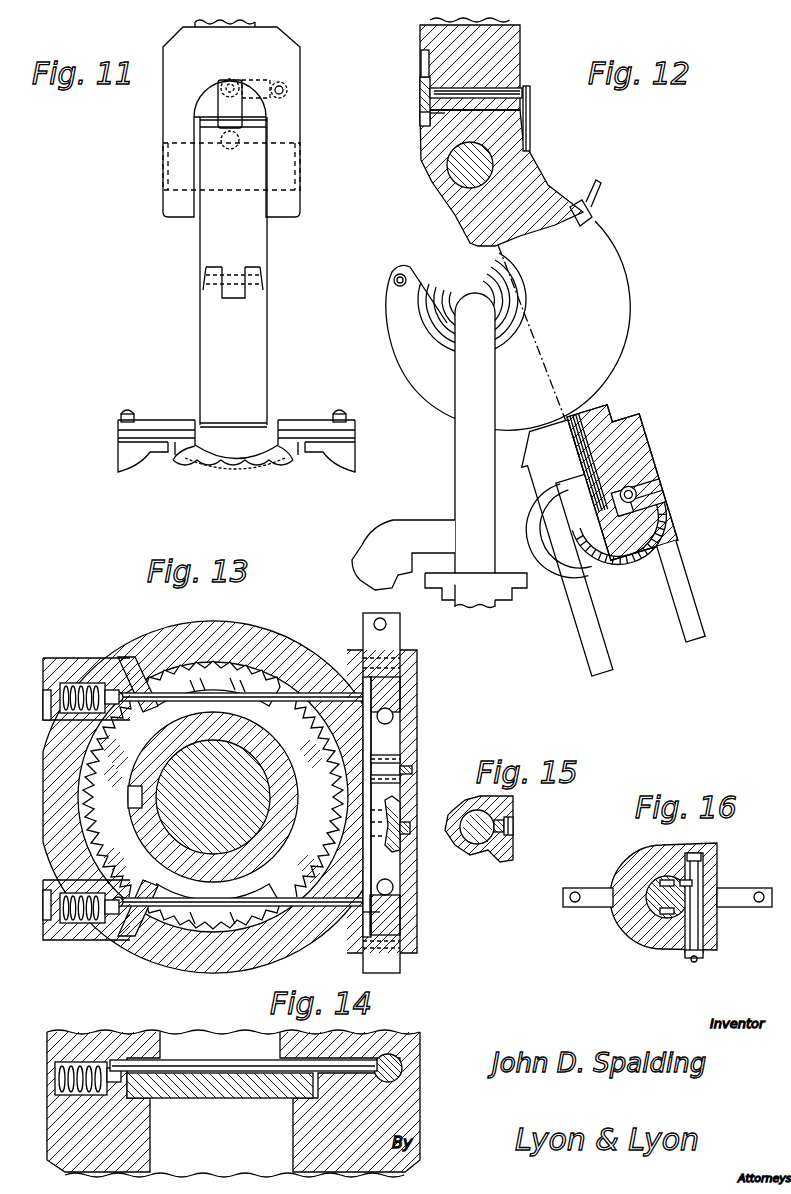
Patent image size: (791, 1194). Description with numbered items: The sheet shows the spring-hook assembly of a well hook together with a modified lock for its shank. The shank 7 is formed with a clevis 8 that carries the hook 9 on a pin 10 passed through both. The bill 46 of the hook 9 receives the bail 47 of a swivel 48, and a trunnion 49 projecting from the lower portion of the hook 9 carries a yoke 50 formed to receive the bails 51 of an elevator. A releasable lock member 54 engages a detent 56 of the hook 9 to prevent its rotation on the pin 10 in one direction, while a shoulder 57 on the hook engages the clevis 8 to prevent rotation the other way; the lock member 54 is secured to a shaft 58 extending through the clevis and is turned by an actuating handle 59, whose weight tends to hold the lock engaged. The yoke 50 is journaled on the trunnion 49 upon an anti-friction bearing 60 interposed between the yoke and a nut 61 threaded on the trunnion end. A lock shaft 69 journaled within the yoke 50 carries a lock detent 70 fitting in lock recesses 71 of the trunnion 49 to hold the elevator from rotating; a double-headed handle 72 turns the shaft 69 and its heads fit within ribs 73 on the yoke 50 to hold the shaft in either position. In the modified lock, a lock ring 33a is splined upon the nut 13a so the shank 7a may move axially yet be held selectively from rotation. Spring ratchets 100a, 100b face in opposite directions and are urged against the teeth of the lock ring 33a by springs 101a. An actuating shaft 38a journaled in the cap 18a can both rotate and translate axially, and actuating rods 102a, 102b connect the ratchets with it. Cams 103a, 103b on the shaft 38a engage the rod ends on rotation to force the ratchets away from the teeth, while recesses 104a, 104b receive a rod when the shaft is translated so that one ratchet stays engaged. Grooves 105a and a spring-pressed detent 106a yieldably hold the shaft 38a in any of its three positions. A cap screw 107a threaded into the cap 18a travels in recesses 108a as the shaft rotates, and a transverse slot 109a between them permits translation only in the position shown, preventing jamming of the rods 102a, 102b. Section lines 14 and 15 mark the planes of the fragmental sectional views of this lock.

In FIG. 11, the shank 7 is at (255, 24).
In FIG. 11, the clevis 8 is at (296, 67).
In FIG. 12, the clevis 8 is at (512, 46).
In FIG. 11, the hook 9 is at (268, 243).
In FIG. 12, the hook 9 is at (617, 298).
In FIG. 11, the pin 10 is at (287, 170).
In FIG. 12, the pin 10 is at (482, 170).
In FIG. 11, the bill 46 is at (256, 282).
In FIG. 12, the bill 46 is at (398, 288).
In FIG. 12, the bail 47 is at (455, 449).
In FIG. 12, the swivel 48 is at (424, 512).
In FIG. 12, the trunnion 49 is at (583, 410).
In FIG. 11, the yoke 50 is at (283, 473).
In FIG. 12, the yoke 50 is at (652, 451).
In FIG. 16, the yoke 50 is at (637, 844).
In FIG. 12, the bails 51 is at (683, 603).
In FIG. 11, the releasable lock member 54 is at (219, 106).
In FIG. 12, the releasable lock member 54 is at (420, 90).
In FIG. 11, the detent 56 is at (250, 128).
In FIG. 12, the detent 56 is at (420, 123).
In FIG. 12, the shoulder 57 is at (530, 104).
In FIG. 12, the shaft 58 is at (500, 83).
In FIG. 12, the actuating handle 59 is at (522, 88).
In FIG. 12, the anti-friction bearing 60 is at (638, 494).
In FIG. 12, the nut 61 is at (660, 522).
In FIG. 16, the lock shaft 69 is at (700, 882).
In FIG. 16, the lock detent 70 is at (696, 906).
In FIG. 16, the lock recesses 71 is at (668, 940).
In FIG. 16, the handle 72 is at (694, 962).
In FIG. 16, the ribs 73 is at (704, 955).
In FIG. 13, the shank 7a is at (242, 790).
In FIG. 13, the nut 13a is at (298, 830).
In FIG. 13, the section line 14— 14 is at (60, 903).
In FIG. 13, the section line 15— 15 is at (360, 828).
In FIG. 13, the cap 18a is at (400, 708).
In FIG. 13, the lock ring 33a is at (220, 672).
In FIG. 14, the lock ring 33a is at (213, 1099).
In FIG. 13, the actuating shaft 38a is at (390, 638).
In FIG. 15, the actuating shaft 38a is at (510, 812).
In FIG. 13, the spring ratchet 100a is at (108, 690).
In FIG. 13, the spring ratchet 100b is at (110, 918).
In FIG. 14, the spring ratchet 100b is at (112, 1068).
In FIG. 13, the springs 101a is at (68, 690).
In FIG. 14, the springs 101a is at (72, 1068).
In FIG. 13, the ratchet actuating rod 102a is at (152, 700).
In FIG. 13, the ratchet actuating rod 102b is at (230, 906).
In FIG. 14, the ratchet actuating rod 102b is at (343, 1062).
In FIG. 13, the cam 103a is at (395, 690).
In FIG. 13, the cam 103b is at (395, 921).
In FIG. 14, the cam 103b is at (405, 1062).
In FIG. 13, the recess 104a is at (394, 716).
In FIG. 13, the recess 104b is at (394, 887).
In FIG. 14, the recess 104b is at (392, 1055).
In FIG. 13, the grooves 105a is at (400, 758).
In FIG. 13, the spring-pressed detent 106a is at (412, 771).
In FIG. 13, the cap screw 107a is at (410, 834).
In FIG. 15, the cap screw 107a is at (506, 827).
In FIG. 15, the recesses 108a is at (481, 846).
In FIG. 15, the transverse slot 109a is at (510, 838).